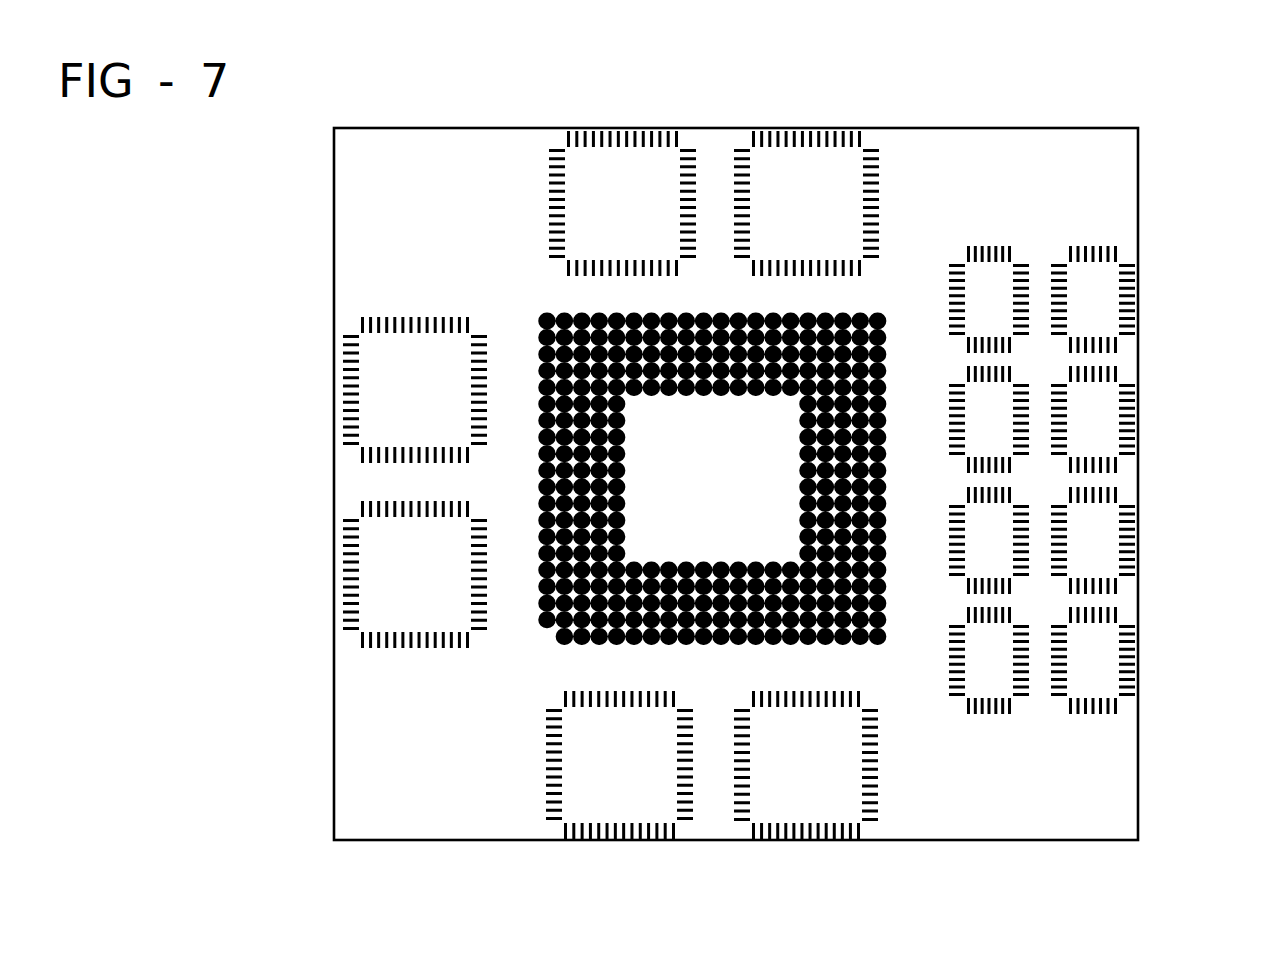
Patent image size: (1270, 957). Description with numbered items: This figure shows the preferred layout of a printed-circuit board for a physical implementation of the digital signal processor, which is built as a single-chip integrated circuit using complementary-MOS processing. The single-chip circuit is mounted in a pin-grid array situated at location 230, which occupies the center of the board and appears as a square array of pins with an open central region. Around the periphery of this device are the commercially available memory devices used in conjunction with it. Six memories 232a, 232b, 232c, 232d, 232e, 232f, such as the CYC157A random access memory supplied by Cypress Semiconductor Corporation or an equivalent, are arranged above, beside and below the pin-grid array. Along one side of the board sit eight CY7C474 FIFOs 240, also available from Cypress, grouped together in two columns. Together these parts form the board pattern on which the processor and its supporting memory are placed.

The memory 232a is at (797, 173).
The memory 232b is at (622, 170).
The memory 232c is at (397, 408).
The memory 232d is at (370, 580).
The memory 232e is at (645, 800).
The memory 232f is at (790, 798).
The location 230 is at (745, 488).
The FIFOs 240 is at (1103, 480).